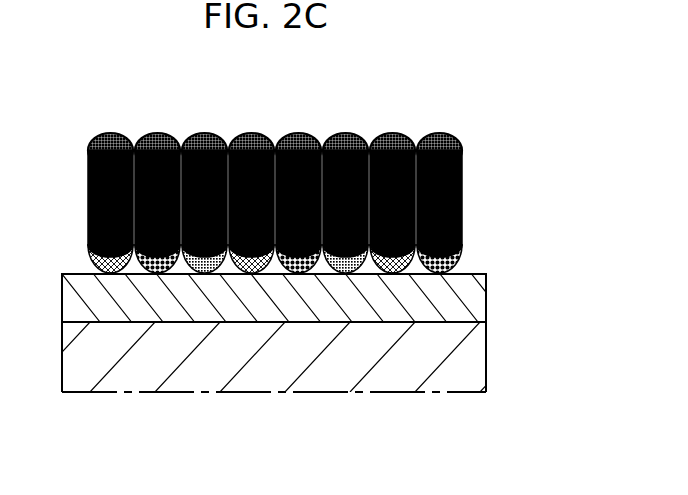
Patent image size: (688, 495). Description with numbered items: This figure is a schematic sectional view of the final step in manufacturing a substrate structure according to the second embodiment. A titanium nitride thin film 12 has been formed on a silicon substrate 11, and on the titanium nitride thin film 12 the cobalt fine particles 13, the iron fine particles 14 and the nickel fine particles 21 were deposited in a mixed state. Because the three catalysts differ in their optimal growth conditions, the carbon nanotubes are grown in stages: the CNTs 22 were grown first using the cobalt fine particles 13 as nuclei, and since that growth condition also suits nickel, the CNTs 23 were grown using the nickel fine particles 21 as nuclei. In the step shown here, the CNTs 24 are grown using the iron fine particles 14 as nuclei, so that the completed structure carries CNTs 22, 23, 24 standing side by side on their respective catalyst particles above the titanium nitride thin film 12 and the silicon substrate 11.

The silicon substrate 11 is at (462, 358).
The titanium nitride thin film 12 is at (463, 302).
The cobalt fine particles 13 is at (94, 268).
The iron fine particles 14 is at (203, 267).
The nickel fine particles 21 is at (462, 263).
The CNTs 22 is at (113, 145).
The CNTs 23 is at (163, 145).
The CNTs 24 is at (203, 145).